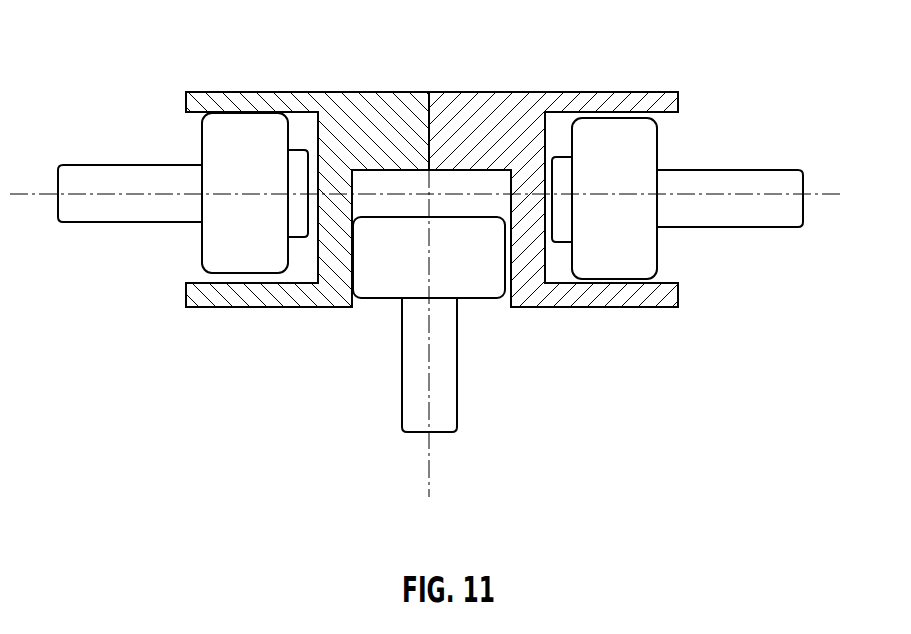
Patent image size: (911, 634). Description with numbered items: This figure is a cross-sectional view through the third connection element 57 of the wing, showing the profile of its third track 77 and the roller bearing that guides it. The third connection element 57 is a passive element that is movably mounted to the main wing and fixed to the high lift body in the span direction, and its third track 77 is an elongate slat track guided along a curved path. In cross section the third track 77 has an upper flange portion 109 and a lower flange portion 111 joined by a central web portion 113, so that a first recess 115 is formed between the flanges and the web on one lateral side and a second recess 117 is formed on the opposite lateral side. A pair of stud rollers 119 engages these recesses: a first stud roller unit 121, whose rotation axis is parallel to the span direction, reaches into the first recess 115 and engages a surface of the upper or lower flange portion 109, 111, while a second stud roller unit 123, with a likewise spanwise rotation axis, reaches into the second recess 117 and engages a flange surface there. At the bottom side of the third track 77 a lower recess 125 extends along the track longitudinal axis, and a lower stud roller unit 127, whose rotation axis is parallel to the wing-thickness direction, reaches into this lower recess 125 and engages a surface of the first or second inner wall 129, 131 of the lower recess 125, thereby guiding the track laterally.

The third connection element 57 is at (414, 203).
The third track 77 is at (202, 90).
The upper flange portion 109 is at (240, 97).
The lower flange portion 111 is at (270, 293).
The web portion 113 is at (407, 102).
The first recess 115 is at (560, 125).
The second recess 117 is at (302, 122).
The pair of stud rollers 119 is at (426, 199).
The first stud roller unit 121 is at (637, 240).
The second stud roller unit 123 is at (220, 242).
The lower recess 125 is at (460, 187).
The lower stud roller unit 127 is at (390, 280).
The first inner wall 129 is at (511, 184).
The second inner wall 131 is at (353, 207).